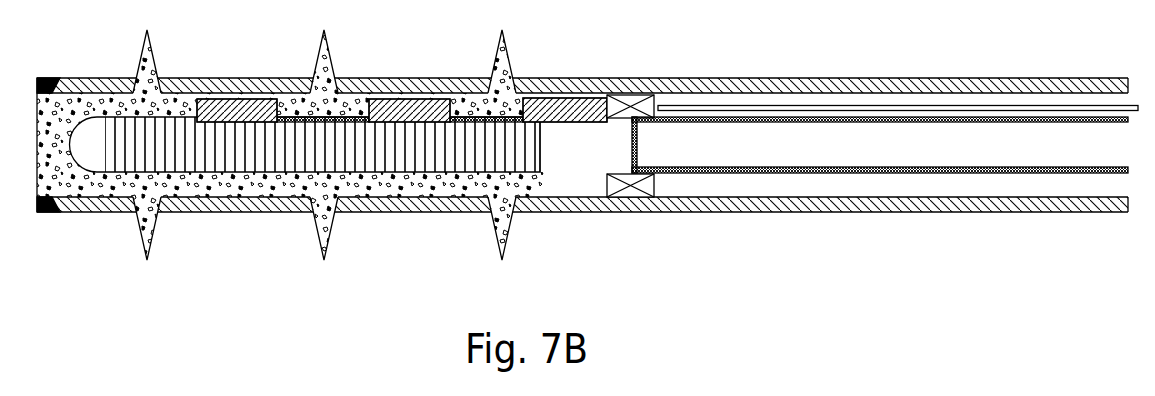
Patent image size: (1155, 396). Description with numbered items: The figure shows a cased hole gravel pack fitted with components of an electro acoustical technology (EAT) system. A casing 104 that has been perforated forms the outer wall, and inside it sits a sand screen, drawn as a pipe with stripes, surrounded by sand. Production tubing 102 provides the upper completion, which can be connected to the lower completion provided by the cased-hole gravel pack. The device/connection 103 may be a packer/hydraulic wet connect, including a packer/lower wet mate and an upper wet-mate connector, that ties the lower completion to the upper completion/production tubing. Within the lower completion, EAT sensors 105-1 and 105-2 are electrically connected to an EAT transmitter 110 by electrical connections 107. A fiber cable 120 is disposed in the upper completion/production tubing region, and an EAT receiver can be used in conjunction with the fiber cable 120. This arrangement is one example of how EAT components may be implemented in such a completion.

The production tubing 102 is at (900, 173).
The device/connection 103 is at (629, 112).
The casing 104 is at (403, 213).
The EAT sensor 105-1 is at (432, 98).
The EAT sensor 105-2 is at (242, 98).
The electrical connections 107 is at (358, 118).
The EAT transmitter 110 is at (581, 98).
The fiber cable 120 is at (960, 108).